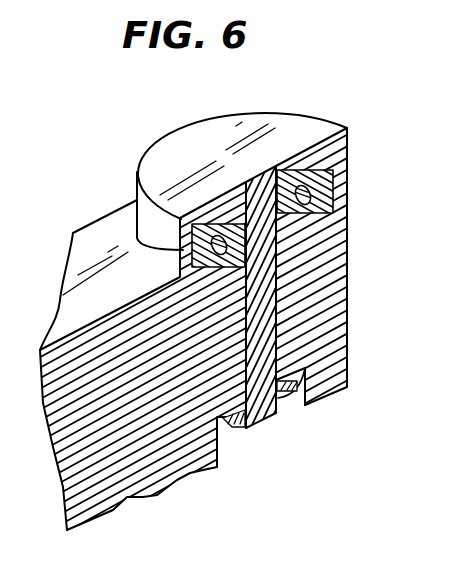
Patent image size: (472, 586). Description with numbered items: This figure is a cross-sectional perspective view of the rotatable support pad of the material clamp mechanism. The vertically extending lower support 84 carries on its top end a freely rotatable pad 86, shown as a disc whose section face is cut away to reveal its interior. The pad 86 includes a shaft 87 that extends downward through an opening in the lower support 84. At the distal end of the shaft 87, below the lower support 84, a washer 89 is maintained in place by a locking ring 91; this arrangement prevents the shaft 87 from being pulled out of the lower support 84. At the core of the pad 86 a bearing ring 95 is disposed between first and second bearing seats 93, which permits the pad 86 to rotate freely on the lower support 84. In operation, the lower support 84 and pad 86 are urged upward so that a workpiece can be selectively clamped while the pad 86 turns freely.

The lower support 84 is at (348, 280).
The freely rotatable pad 86 is at (337, 124).
The shaft 87 is at (264, 416).
The washer 89 is at (276, 399).
The locking ring 91 is at (242, 420).
The bearing seat 93 is at (335, 170).
The bearing ring 95 is at (180, 268).